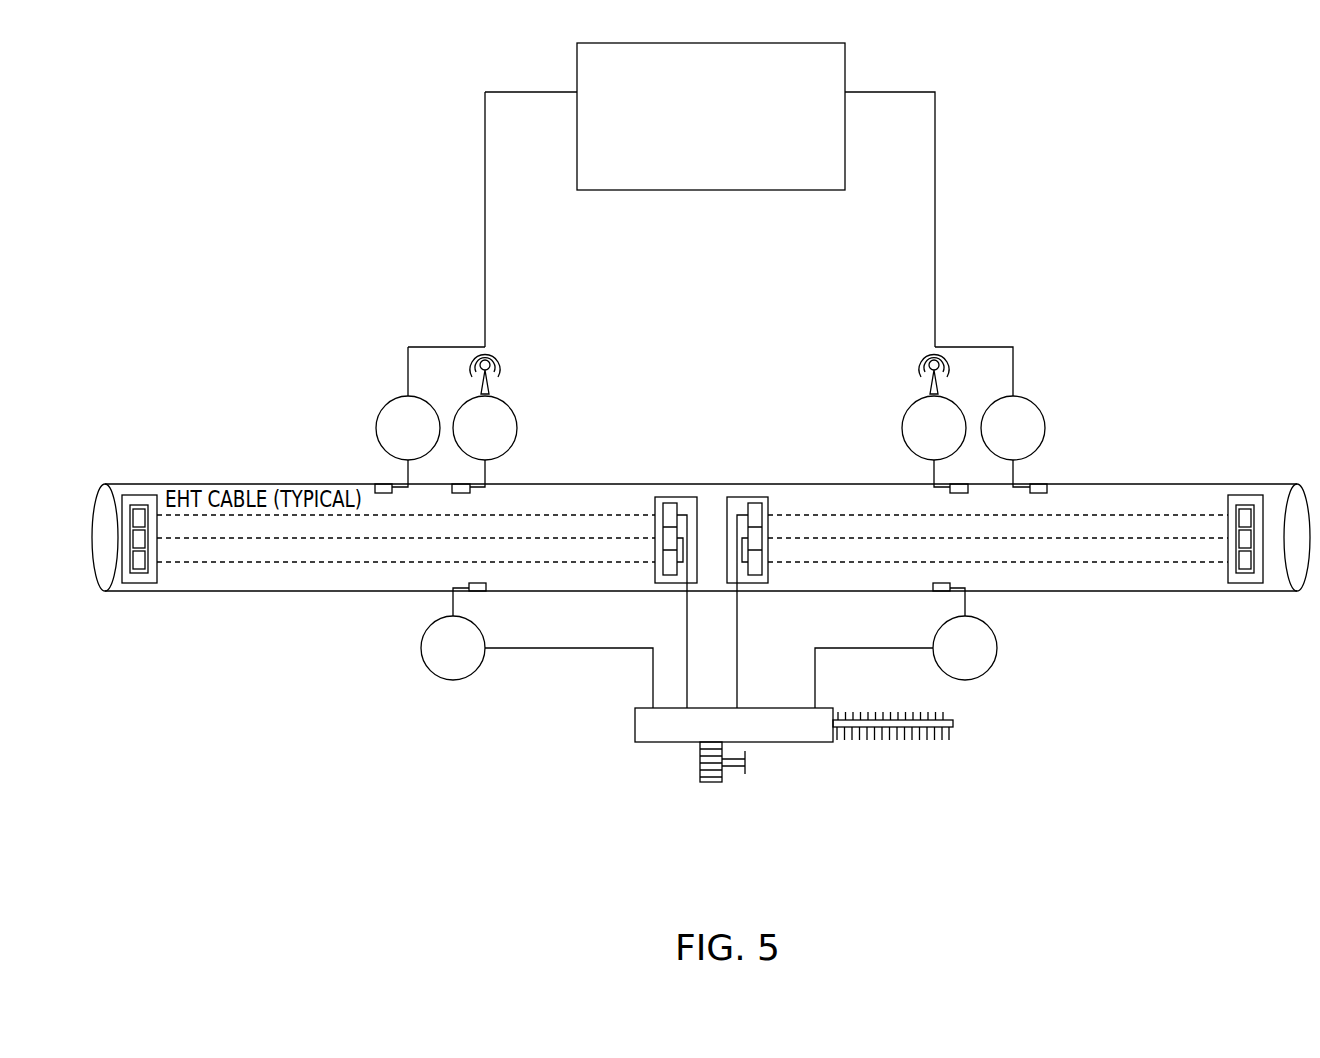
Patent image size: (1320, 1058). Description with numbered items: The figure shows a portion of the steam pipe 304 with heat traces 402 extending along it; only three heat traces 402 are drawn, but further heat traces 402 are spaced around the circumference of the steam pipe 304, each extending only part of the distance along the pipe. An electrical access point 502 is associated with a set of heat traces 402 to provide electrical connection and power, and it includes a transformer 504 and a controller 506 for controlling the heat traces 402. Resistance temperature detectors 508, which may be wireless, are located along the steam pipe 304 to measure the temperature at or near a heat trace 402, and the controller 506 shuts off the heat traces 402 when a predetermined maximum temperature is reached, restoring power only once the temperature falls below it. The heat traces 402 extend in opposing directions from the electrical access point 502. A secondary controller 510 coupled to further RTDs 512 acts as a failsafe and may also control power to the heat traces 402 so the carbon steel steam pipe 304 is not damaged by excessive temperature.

The electrical access point 502 is at (966, 843).
The transformer 504 is at (711, 782).
The controller 506 is at (653, 742).
The resistance temperature detector 508 is at (518, 428).
The secondary controller 510 is at (697, 190).
The further RTD 512 is at (389, 402).
The heat trace 402 is at (570, 515).
The steam pipe 304 is at (232, 592).